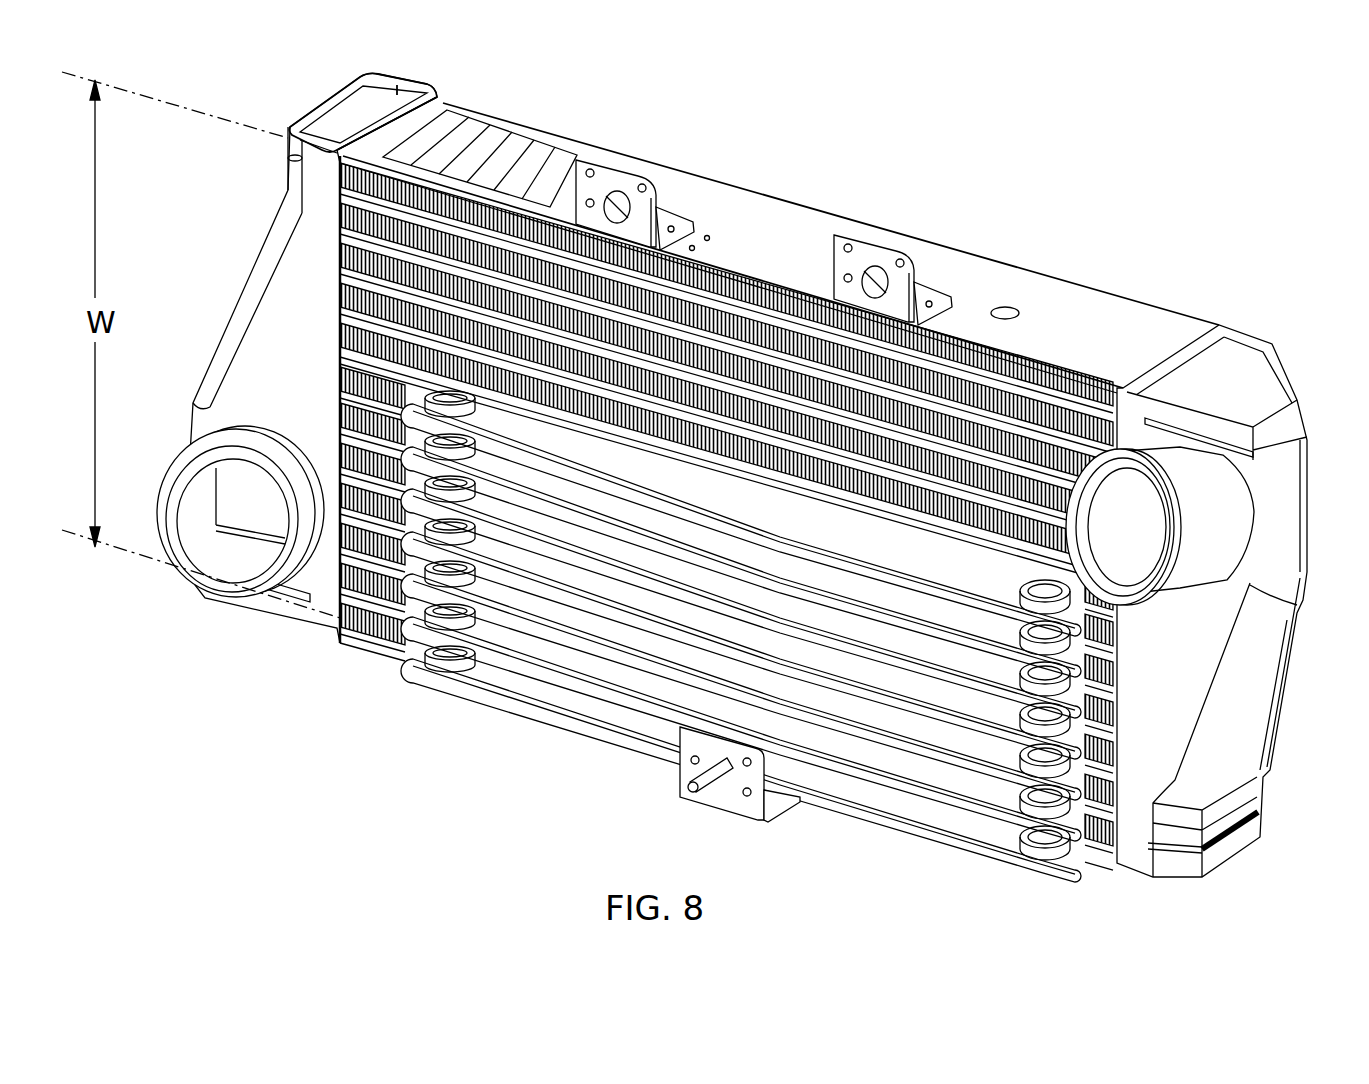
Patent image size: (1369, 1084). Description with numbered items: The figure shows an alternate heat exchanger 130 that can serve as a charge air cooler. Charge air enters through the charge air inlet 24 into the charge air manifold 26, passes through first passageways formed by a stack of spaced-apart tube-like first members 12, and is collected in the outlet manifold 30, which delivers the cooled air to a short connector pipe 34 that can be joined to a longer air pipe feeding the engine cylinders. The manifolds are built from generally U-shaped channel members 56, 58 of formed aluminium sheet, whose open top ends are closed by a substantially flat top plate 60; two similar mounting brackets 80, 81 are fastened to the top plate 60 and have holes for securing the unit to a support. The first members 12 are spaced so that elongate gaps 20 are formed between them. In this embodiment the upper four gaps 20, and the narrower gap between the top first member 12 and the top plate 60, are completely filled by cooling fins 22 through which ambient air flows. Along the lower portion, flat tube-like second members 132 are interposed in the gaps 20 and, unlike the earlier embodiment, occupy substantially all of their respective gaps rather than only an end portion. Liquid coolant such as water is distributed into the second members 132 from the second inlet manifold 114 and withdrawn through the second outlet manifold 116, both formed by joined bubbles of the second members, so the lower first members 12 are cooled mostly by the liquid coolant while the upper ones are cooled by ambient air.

The tube-like first members 12 is at (340, 303).
The elongate gaps 20 is at (690, 345).
The cooling fins 22 is at (340, 243).
The charge air inlet 24 is at (218, 565).
The charge air manifold 26 is at (278, 318).
The outlet manifold 30 is at (1253, 735).
The connector pipe 34 is at (1226, 541).
The U-shaped channel member 56 is at (248, 368).
The U-shaped channel member 58 is at (1273, 683).
The top plate 60 is at (1055, 297).
The mounting bracket 80 is at (620, 182).
The mounting bracket 81 is at (858, 250).
The second inlet manifold 114 is at (1027, 757).
The second outlet manifold 116 is at (440, 657).
The heat exchanger 130 is at (918, 218).
The tube-like second members 132 is at (593, 625).